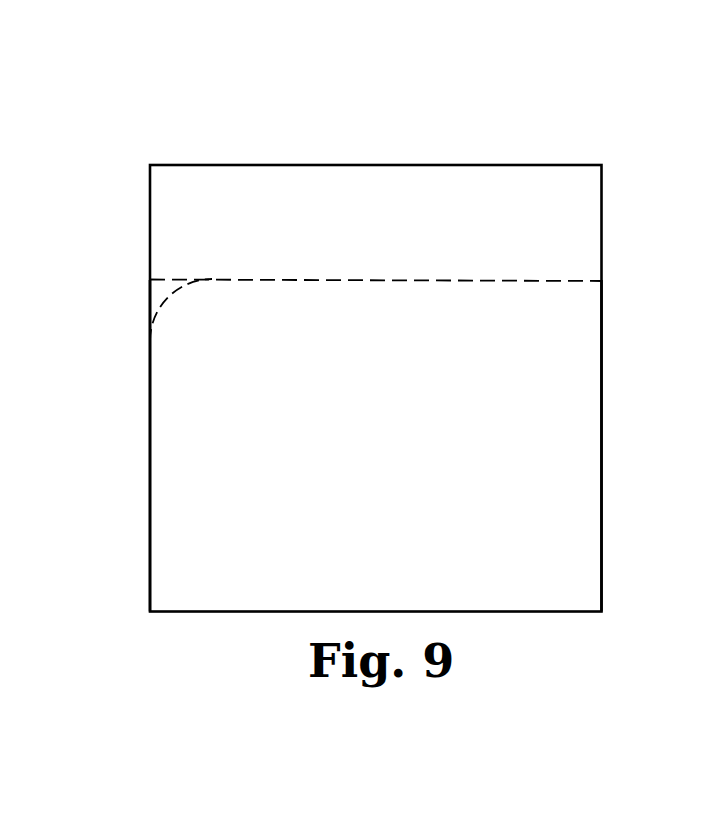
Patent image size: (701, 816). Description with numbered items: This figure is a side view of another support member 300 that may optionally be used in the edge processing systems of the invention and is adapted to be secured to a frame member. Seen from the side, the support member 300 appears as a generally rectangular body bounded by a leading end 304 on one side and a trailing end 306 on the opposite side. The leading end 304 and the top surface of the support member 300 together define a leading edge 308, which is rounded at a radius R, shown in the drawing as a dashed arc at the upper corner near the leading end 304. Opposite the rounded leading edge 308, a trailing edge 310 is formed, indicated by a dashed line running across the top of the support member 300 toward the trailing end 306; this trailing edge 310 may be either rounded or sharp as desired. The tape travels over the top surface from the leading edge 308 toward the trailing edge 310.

The support member 300 is at (277, 112).
The leading end 304 is at (150, 352).
The trailing end 306 is at (603, 422).
The leading edge 308 is at (152, 311).
The trailing edge 310 is at (603, 281).
The radius R is at (168, 302).